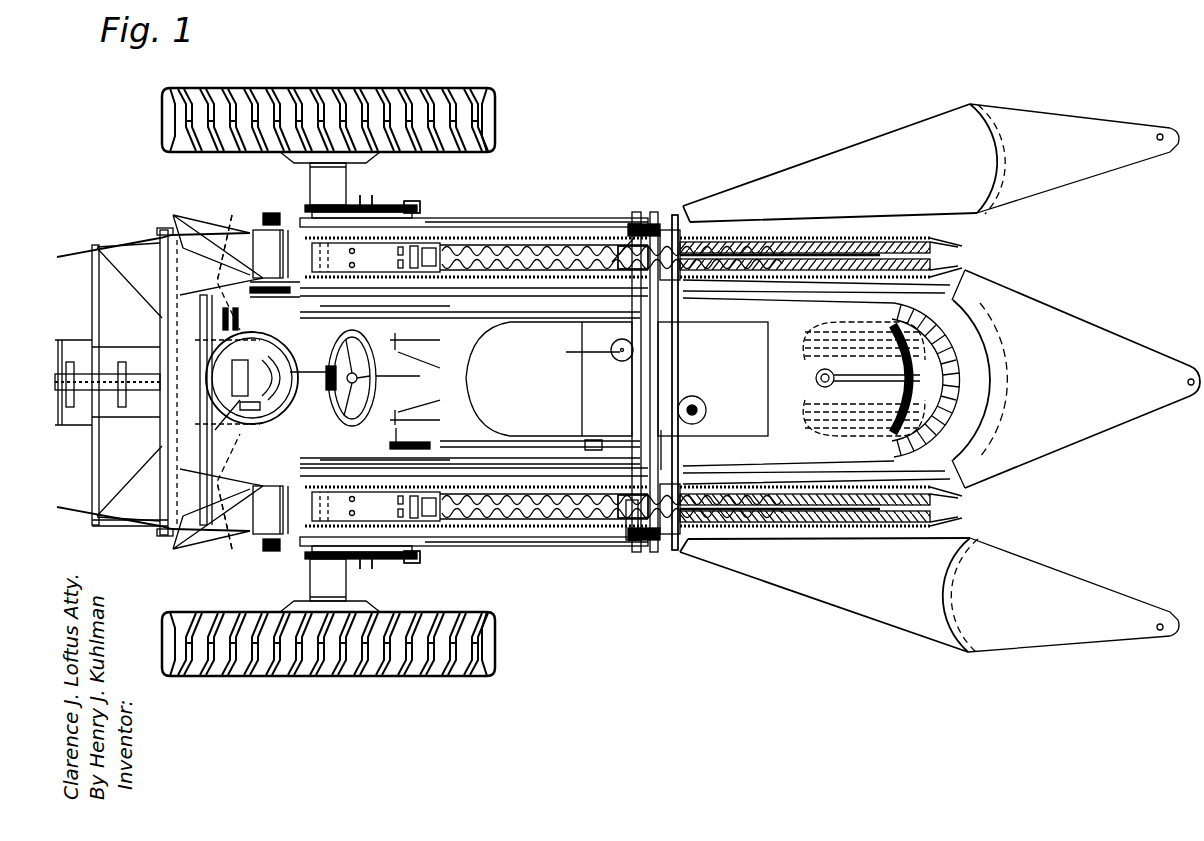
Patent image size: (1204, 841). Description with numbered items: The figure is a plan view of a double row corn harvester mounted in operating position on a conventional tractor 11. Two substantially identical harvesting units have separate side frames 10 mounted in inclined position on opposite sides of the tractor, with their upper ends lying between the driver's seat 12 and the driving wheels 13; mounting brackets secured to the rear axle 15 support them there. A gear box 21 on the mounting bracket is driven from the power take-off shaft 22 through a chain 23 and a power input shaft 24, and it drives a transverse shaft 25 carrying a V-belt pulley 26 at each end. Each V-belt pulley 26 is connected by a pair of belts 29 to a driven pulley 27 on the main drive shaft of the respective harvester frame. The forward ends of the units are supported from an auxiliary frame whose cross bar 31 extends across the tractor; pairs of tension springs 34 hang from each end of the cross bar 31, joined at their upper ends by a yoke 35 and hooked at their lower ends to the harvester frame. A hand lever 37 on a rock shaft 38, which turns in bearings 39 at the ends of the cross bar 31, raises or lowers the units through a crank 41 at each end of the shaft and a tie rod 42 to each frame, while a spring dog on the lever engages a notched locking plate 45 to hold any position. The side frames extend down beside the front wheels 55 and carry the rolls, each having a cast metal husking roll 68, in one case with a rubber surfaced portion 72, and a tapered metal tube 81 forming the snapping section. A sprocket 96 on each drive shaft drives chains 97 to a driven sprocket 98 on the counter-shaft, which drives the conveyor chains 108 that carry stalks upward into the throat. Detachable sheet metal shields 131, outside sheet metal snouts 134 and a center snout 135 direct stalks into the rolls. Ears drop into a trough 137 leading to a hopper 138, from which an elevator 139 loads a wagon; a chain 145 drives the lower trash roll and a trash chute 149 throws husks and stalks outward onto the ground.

The side frame 10 is at (592, 218).
The tractor 11 is at (542, 381).
The driver's seat 12 is at (252, 369).
The driving wheels 13 is at (402, 88).
The rear axle 15 is at (350, 178).
The gear box 21 is at (338, 326).
The power take-off shaft 22 is at (250, 400).
The chain 23 is at (200, 332).
The power input shaft 24 is at (270, 322).
The transverse shaft 25 is at (296, 454).
The V-belt pulley 26 is at (312, 206).
The driven pulley 27 is at (414, 201).
The belts 29 is at (373, 381).
The cross bar 31 is at (656, 364).
The tension springs 34 is at (636, 222).
The yoke 35 is at (634, 540).
The hand lever 37 is at (395, 452).
The rock shaft 38 is at (650, 340).
The bearings 39 is at (630, 270).
The crank 41 is at (676, 222).
The tie rod 42 is at (680, 470).
The notched locking plate 45 is at (608, 440).
The front wheels 55 is at (800, 405).
The husking roll 68 is at (518, 238).
The rubber surfaced portion 72 is at (633, 222).
The tapered metal tubes 81 is at (824, 243).
The sprocket 96 is at (430, 314).
The chains 97 is at (420, 336).
The driven sprocket 98 is at (290, 282).
The conveyor chains 108 is at (460, 238).
The sheet metal shields 131 is at (842, 378).
The sheet metal snouts 134 is at (1073, 378).
The center snout 135 is at (1076, 379).
The trough 137 is at (214, 268).
The hopper 138 is at (116, 382).
The elevator 139 is at (78, 410).
The chain 145 is at (218, 520).
The trash chute 149 is at (192, 198).